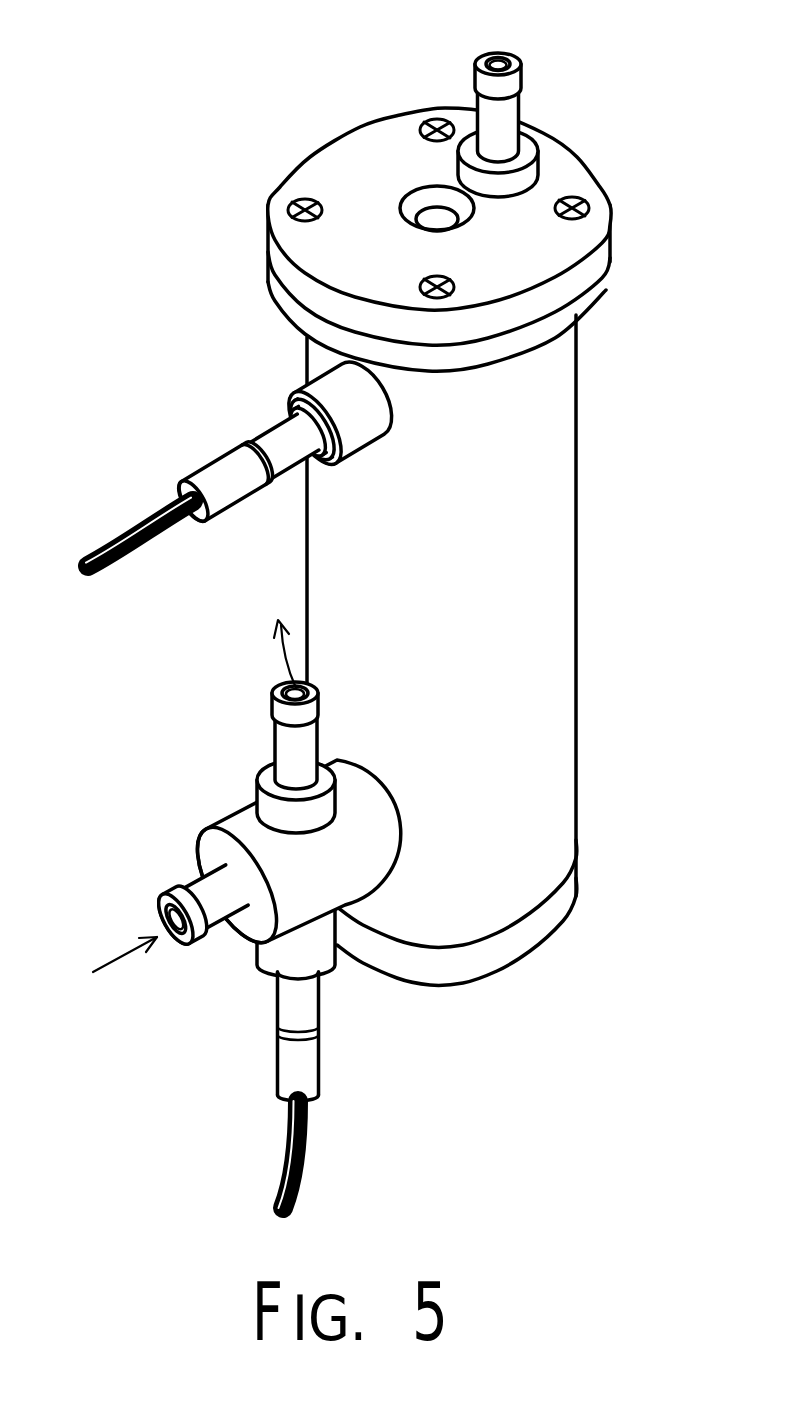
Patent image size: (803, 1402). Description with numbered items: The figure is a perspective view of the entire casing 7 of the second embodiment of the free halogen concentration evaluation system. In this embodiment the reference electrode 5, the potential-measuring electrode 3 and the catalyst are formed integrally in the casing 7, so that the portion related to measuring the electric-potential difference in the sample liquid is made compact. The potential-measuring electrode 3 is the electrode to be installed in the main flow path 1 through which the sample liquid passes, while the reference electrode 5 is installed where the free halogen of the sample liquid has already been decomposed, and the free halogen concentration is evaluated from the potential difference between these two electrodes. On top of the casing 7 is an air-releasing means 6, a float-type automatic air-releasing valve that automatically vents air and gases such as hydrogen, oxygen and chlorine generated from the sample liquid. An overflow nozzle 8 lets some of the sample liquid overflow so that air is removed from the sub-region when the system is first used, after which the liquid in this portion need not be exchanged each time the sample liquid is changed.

The main flow path 1 is at (290, 660).
The potential-measuring electrode 3 is at (305, 1153).
The reference electrode 5 is at (138, 517).
The air-releasing means 6 is at (433, 218).
The casing 7 is at (540, 592).
The overflow nozzle 8 is at (495, 55).